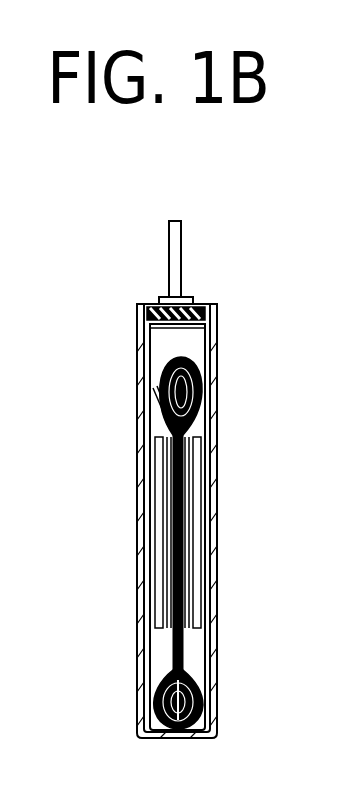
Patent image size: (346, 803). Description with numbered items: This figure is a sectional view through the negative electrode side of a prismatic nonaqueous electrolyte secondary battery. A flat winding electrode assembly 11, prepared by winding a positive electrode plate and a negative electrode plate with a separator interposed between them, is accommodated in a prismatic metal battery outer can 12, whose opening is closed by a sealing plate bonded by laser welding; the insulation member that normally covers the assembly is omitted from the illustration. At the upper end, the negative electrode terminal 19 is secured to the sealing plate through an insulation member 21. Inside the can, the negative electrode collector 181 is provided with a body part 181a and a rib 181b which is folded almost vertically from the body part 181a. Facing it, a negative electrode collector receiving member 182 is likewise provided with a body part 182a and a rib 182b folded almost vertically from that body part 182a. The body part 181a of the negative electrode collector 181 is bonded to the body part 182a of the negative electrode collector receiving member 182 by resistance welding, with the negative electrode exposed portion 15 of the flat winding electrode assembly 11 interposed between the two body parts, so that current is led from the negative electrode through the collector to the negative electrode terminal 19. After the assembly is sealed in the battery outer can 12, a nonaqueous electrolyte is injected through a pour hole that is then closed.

The flat winding electrode assembly 11 is at (200, 694).
The battery outer can 12 is at (214, 650).
The negative electrode exposed portion 15 is at (173, 652).
The negative electrode terminal 19 is at (180, 243).
The insulation member 21 is at (156, 306).
The negative electrode collector 181 is at (111, 532).
The body part 181a is at (160, 472).
The rib 181b is at (160, 592).
The negative electrode collector receiving member 182 is at (242, 523).
The body part 182a is at (203, 470).
The rib 182b is at (205, 590).